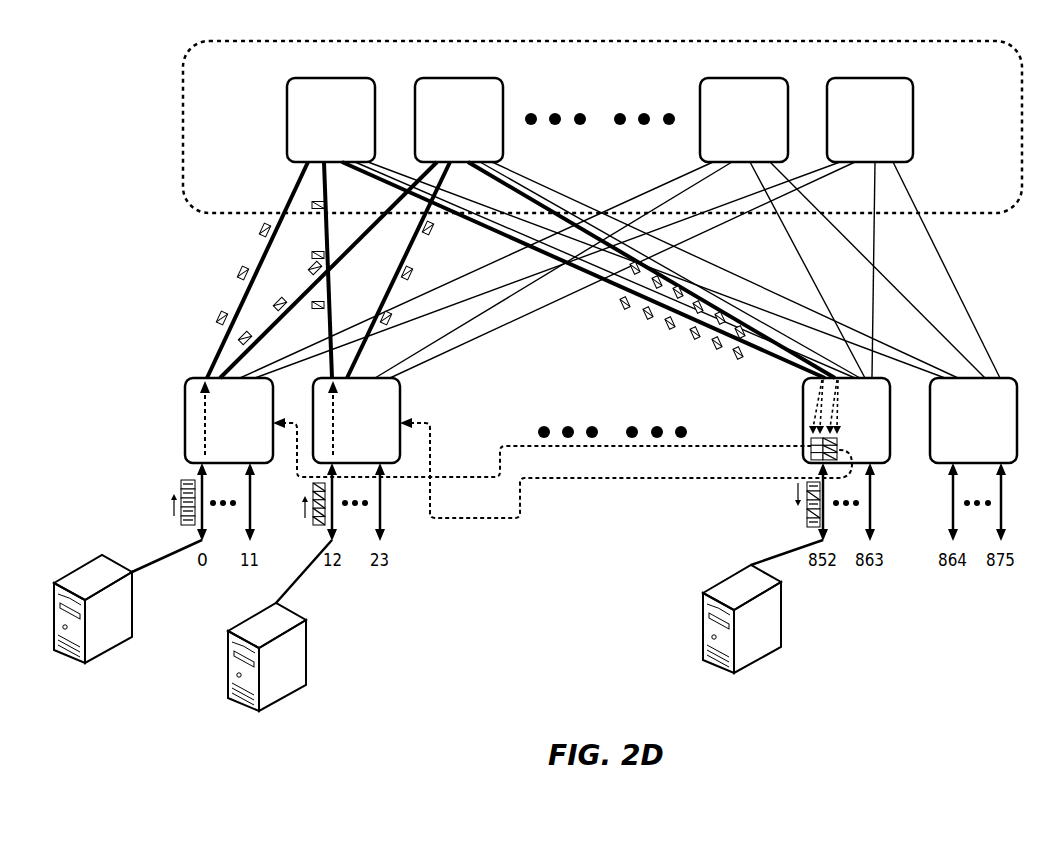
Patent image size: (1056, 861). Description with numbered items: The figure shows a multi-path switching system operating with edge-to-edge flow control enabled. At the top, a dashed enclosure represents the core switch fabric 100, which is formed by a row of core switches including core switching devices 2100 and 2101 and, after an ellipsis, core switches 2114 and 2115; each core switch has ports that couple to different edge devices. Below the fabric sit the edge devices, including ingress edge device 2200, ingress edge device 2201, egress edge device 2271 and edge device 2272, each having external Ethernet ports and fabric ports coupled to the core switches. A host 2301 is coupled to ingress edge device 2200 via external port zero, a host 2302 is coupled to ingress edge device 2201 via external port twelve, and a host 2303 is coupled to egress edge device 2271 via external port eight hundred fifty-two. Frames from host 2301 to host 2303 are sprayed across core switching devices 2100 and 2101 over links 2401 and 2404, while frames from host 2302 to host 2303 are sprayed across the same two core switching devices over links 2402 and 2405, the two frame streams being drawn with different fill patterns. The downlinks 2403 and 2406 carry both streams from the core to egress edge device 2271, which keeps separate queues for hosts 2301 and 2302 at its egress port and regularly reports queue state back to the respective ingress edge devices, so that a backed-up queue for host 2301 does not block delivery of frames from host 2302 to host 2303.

The core switch fabric 100 is at (290, 41).
The core switching device 2100 is at (331, 120).
The core switching device 2101 is at (459, 120).
The core switch 2114 is at (744, 120).
The core switch 2115 is at (870, 120).
The ingress edge device 2200 is at (229, 420).
The ingress edge device 2201 is at (356, 420).
The egress edge device 2271 is at (846, 420).
The edge device 2272 is at (973, 420).
The host 2301 is at (105, 652).
The host 2302 is at (297, 692).
The host 2303 is at (760, 662).
The link 2401 is at (213, 359).
The link 2402 is at (329, 312).
The downlink carrying packets 2403 is at (778, 364).
The link 2404 is at (338, 263).
The link 2405 is at (413, 258).
The downlink carrying packets 2406 is at (757, 330).